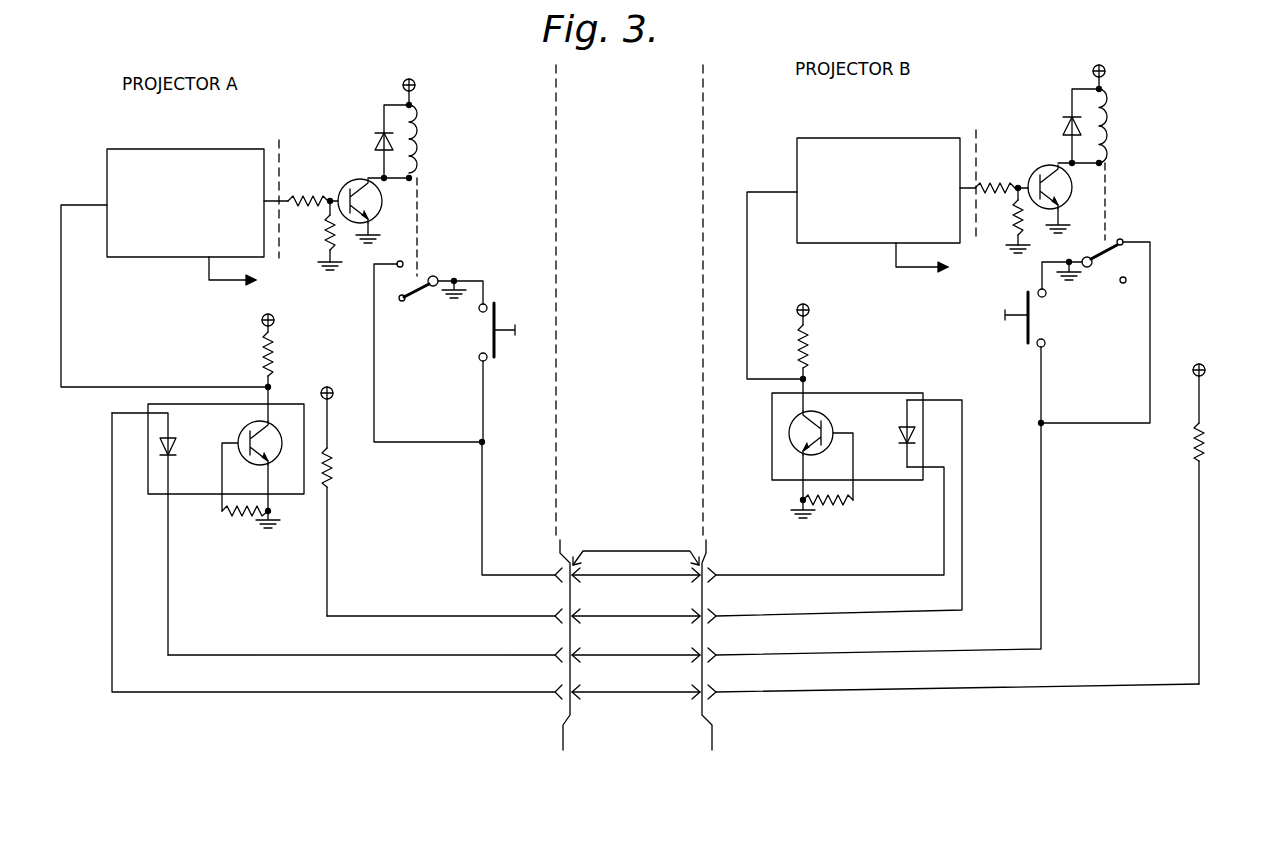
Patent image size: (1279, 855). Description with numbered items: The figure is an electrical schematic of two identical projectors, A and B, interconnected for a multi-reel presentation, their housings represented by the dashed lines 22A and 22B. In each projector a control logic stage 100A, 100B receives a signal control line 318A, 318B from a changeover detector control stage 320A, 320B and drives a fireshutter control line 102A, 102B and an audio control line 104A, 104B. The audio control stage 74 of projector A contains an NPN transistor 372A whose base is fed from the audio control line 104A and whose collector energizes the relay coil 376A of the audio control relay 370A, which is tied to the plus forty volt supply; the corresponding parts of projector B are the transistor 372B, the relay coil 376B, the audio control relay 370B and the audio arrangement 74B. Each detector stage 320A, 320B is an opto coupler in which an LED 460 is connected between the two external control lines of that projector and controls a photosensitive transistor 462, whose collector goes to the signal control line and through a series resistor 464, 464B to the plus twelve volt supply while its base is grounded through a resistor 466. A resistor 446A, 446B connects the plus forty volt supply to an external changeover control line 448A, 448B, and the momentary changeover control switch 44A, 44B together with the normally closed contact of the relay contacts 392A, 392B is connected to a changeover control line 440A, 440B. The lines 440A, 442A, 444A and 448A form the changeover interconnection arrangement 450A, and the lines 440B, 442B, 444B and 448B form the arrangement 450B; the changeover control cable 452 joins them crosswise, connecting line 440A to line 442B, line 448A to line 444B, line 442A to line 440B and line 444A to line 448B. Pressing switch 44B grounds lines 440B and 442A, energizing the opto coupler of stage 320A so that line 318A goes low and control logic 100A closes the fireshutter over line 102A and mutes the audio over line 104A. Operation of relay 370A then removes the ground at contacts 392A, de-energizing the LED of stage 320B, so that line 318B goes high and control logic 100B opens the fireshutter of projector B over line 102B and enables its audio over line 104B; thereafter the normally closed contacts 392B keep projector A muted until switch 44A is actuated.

The control logic stage of projector A 100A is at (167, 150).
The audio control line of projector A 104A is at (283, 201).
The NPN transistor of projector A 372A is at (344, 180).
The relay coil of projector A 376A is at (418, 150).
The audio control stage 74 is at (446, 135).
The audio control relay of projector A 370A is at (431, 230).
The frame of projector A 22A is at (555, 93).
The signal control line of projector A 318A is at (63, 312).
The fireshutter control line of projector A 102A is at (213, 284).
The series resistor 464 is at (275, 352).
The photosensitive transistor 462 is at (246, 432).
The LED 460 is at (172, 448).
The changeover detector control stage of projector A 320A is at (194, 497).
The resistor 466 is at (244, 518).
The isolation resistor of projector A 446A is at (338, 470).
The second set of relay contacts of projector A 392A is at (428, 297).
The changeover control of projector A 44A is at (511, 336).
The changeover control line of projector A 440A is at (483, 578).
The external changeover control line of projector A 448A is at (401, 618).
The external control line of projector A 442A is at (401, 657).
The external control line of projector A 444A is at (401, 694).
The changeover interconnection arrangement of projector A 450A is at (563, 656).
The changeover control interconnection cable 452 is at (636, 612).
The changeover interconnection arrangement of projector B 450B is at (704, 654).
The frame of projector B 22B is at (706, 128).
The control logic stage of projector B 100B is at (878, 137).
The audio control line of projector B 104B is at (978, 185).
The NPN transistor of projector B 372B is at (1032, 176).
The relay coil of projector B 376B is at (1106, 125).
The audio arrangement of projector B 74B is at (1136, 162).
The audio control relay of projector B 370B is at (1123, 202).
The second set of relay contacts of projector B 392B is at (1096, 270).
The changeover control of projector B 44B is at (1004, 321).
The signal control line of projector B 318B is at (749, 276).
The fireshutter control line of projector B 102B is at (932, 270).
The series resistor of projector B 464B is at (811, 353).
The changeover detector control stage of projector B 320B is at (866, 392).
The isolation resistor of projector B 446B is at (1195, 441).
The external control line of projector B 442B is at (798, 575).
The external control line of projector B 444B is at (808, 612).
The changeover control line of projector B 440B is at (808, 651).
The external changeover control line of projector B 448B is at (760, 692).